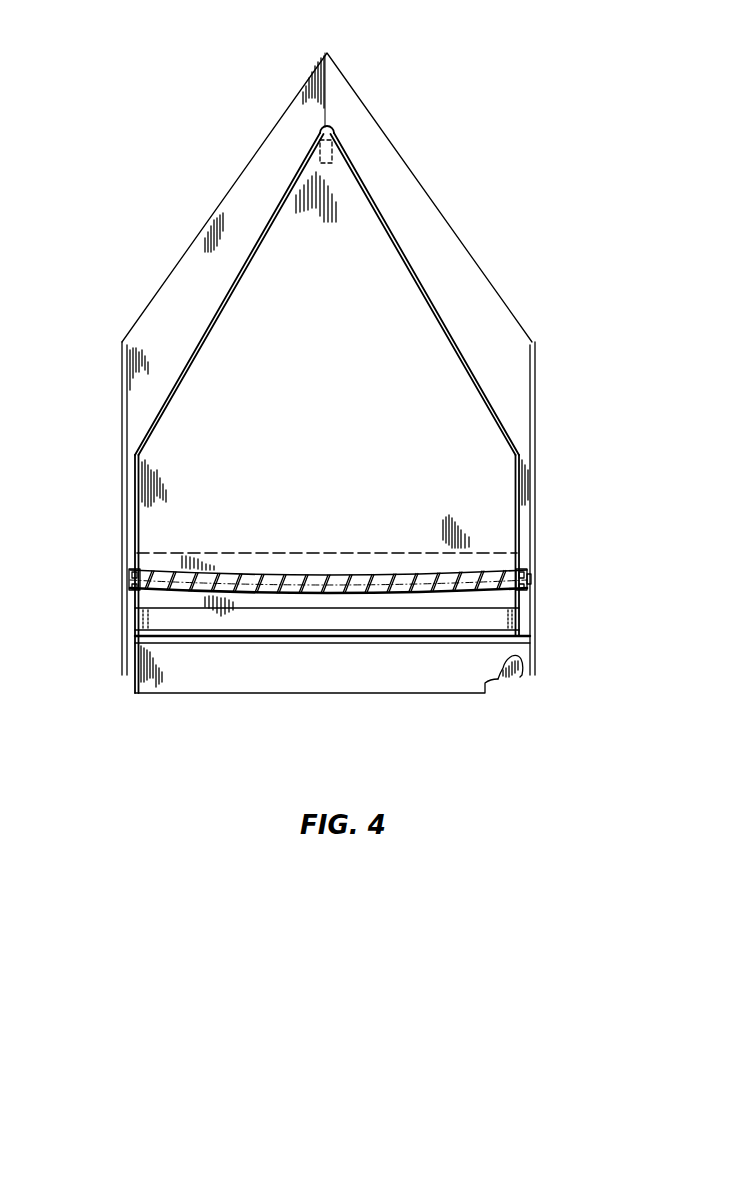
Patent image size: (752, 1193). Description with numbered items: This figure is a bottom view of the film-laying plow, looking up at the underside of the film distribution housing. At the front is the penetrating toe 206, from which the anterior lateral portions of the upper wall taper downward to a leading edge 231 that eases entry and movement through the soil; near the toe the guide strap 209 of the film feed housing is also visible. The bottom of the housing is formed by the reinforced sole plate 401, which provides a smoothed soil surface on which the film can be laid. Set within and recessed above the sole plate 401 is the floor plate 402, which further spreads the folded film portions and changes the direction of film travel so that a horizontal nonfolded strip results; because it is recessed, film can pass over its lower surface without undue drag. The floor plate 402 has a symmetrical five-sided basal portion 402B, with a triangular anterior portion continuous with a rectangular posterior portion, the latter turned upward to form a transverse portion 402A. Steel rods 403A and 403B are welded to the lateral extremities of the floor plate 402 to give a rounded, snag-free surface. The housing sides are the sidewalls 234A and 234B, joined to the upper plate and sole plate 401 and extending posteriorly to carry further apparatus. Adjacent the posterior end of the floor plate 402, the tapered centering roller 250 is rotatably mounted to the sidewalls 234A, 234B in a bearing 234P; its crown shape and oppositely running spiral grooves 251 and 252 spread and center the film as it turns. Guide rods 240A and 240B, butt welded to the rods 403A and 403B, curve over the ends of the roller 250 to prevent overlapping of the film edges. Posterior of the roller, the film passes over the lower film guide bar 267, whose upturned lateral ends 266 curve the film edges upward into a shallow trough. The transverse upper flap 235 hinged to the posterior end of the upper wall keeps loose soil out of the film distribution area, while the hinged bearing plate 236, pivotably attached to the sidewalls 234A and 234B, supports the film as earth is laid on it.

The toe 206 is at (328, 53).
The guide strap 209 is at (338, 138).
The leading edge 231 is at (438, 210).
The sidewall 234A is at (122, 605).
The sidewall 234B is at (535, 512).
The bearing 234P is at (535, 578).
The upper flap 235 is at (515, 678).
The bearing plate 236 is at (316, 676).
The guide rod 240A is at (138, 569).
The guide rod 240B is at (520, 565).
The centering roller 250 is at (328, 532).
The spiral groove 251 is at (243, 572).
The spiral groove 252 is at (368, 580).
The upturned lateral end 266 is at (522, 620).
The lower film guide bar 267 is at (362, 626).
The reinforced sole plate 401 is at (452, 273).
The floor plate 402 is at (330, 375).
The upturned portion 402A is at (308, 553).
The basal portion 402B is at (487, 475).
The steel rod 403A is at (229, 290).
The steel rod 403B is at (375, 200).